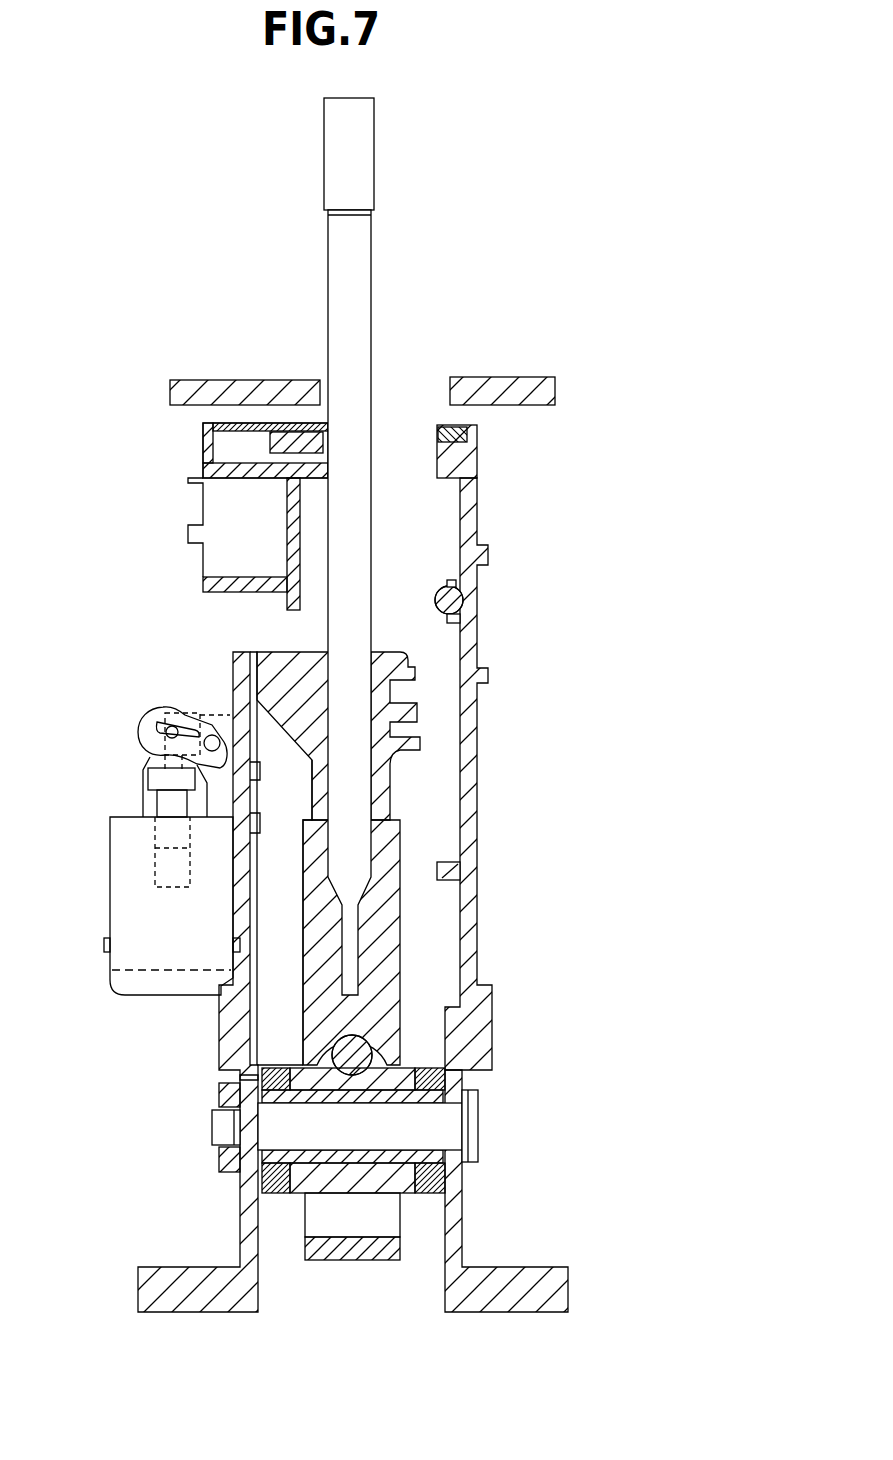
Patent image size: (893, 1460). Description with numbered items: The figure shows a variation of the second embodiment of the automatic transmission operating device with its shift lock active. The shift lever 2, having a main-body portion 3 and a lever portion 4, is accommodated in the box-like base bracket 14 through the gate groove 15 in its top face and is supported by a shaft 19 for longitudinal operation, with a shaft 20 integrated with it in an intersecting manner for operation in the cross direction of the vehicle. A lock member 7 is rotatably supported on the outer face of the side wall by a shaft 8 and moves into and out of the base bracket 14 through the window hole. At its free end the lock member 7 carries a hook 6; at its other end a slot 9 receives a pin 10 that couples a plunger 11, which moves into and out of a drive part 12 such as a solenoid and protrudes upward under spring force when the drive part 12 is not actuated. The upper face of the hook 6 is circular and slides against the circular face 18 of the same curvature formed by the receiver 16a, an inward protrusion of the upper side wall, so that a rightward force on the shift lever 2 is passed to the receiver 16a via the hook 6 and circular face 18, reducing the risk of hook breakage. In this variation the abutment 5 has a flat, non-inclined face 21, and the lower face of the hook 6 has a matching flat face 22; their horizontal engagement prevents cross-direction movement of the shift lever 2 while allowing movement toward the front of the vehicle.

The shift lever 2 is at (372, 284).
The main-body portion 3 is at (400, 743).
The lever portion 4 is at (400, 633).
The abutment 5 is at (296, 617).
The hook 6 is at (312, 650).
The lock member 7 is at (223, 642).
The shaft 8 is at (205, 718).
The slot 9 is at (165, 738).
The pin 10 is at (155, 710).
The plunger 11 is at (148, 793).
The drive part 12 is at (132, 889).
The base bracket 14 is at (480, 857).
The gate groove 15 is at (437, 460).
The receiver 16a is at (232, 575).
The circular face 18 is at (216, 596).
The shaft 19 is at (480, 1130).
The shaft 20 is at (354, 1052).
The flat face 21 is at (268, 650).
The flat face 22 is at (288, 653).